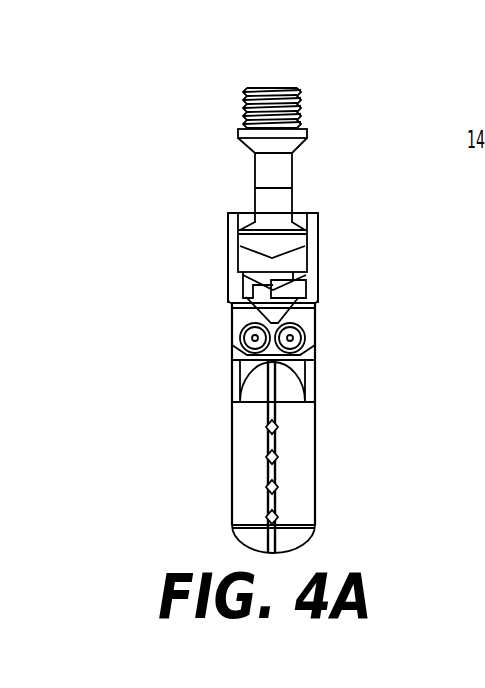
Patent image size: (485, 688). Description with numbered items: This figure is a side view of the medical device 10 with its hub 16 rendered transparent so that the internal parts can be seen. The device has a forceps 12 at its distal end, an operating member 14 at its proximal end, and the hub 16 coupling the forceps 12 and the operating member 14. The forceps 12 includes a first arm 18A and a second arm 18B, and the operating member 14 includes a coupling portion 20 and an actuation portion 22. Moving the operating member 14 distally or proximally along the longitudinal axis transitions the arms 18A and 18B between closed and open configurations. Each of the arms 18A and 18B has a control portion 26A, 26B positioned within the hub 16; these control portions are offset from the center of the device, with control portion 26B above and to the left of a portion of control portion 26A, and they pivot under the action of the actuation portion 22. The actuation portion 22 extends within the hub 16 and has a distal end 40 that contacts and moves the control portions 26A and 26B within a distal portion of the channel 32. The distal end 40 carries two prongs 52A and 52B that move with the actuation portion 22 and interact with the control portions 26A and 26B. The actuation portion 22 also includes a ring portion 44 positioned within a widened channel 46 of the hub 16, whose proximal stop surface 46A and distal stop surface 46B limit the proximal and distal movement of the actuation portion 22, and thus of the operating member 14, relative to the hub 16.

The medical device 10 is at (115, 213).
The forceps 12 is at (367, 497).
The operating member 14 is at (180, 148).
The hub 16 is at (318, 246).
The first arm 18A is at (300, 463).
The second arm 18B is at (245, 463).
The coupling portion 20 is at (302, 88).
The actuation portion 22 is at (292, 178).
The control portion 26A is at (303, 375).
The control portion 26B is at (243, 364).
The channel 32 is at (243, 278).
The distal end 40 is at (230, 298).
The ring portion 44 is at (255, 237).
The widened channel 46 is at (242, 252).
The proximal stop surface 46A is at (298, 224).
The distal stop surface 46B is at (295, 276).
The prong 52A is at (300, 311).
The prong 52B is at (245, 311).